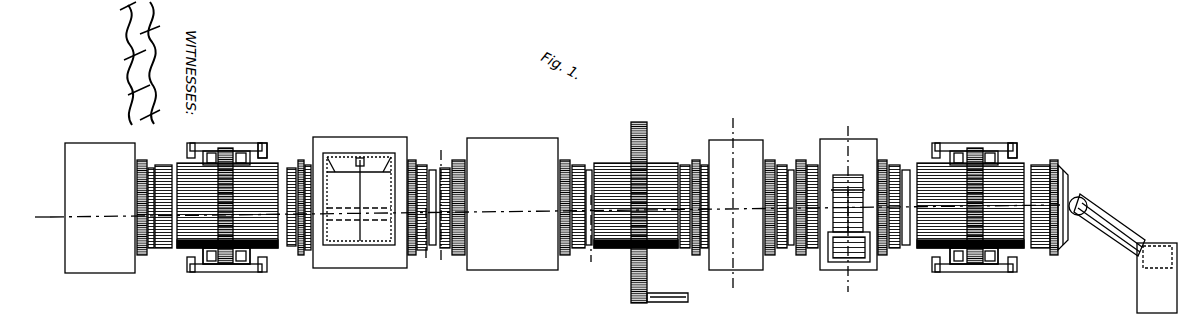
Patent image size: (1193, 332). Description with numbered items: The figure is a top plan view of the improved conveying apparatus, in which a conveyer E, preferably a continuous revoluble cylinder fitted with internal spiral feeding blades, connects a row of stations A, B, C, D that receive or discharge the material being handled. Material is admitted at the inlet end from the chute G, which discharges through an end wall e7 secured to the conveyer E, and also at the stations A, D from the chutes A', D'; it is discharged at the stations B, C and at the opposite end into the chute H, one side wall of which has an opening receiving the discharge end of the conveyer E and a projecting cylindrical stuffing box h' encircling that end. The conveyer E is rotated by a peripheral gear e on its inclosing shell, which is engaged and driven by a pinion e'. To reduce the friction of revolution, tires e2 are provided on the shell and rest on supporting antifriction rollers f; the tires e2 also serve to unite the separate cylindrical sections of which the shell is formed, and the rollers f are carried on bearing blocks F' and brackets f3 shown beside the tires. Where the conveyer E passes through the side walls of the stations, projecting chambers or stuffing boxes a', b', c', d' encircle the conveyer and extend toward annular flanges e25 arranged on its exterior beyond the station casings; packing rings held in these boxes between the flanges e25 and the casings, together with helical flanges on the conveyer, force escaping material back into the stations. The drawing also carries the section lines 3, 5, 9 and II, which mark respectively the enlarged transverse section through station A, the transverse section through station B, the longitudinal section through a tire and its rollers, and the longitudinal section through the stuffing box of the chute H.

The chute H is at (112, 273).
The section line 11—11 II is at (229, 248).
The stuffing box h' is at (145, 190).
The conveyer E is at (179, 158).
The tires e2 is at (226, 148).
The antifriction rollers f is at (240, 152).
The bearing block F' is at (600, 274).
The bracket lug f3 is at (262, 145).
The annular flanges e25 is at (291, 168).
The stuffing box d' is at (362, 189).
The station D is at (360, 191).
The chute D' is at (359, 225).
The section line 9— 9 is at (511, 206).
The stuffing box c' is at (522, 189).
The station C is at (512, 138).
The peripheral gear e is at (639, 200).
The pinion e' is at (657, 312).
The stuffing box b' is at (737, 192).
The station B is at (750, 140).
The section line 5— 5 is at (732, 206).
The stuffing box a' is at (853, 192).
The station A is at (849, 191).
The chute A' is at (853, 235).
The section line 3— 3 is at (847, 209).
The end wall e7 is at (1070, 185).
The chute G is at (1110, 213).